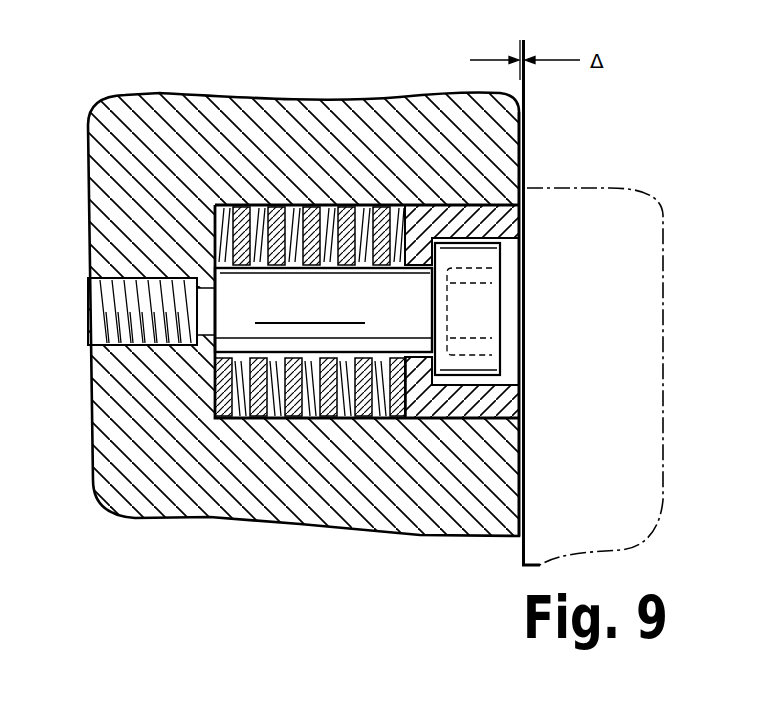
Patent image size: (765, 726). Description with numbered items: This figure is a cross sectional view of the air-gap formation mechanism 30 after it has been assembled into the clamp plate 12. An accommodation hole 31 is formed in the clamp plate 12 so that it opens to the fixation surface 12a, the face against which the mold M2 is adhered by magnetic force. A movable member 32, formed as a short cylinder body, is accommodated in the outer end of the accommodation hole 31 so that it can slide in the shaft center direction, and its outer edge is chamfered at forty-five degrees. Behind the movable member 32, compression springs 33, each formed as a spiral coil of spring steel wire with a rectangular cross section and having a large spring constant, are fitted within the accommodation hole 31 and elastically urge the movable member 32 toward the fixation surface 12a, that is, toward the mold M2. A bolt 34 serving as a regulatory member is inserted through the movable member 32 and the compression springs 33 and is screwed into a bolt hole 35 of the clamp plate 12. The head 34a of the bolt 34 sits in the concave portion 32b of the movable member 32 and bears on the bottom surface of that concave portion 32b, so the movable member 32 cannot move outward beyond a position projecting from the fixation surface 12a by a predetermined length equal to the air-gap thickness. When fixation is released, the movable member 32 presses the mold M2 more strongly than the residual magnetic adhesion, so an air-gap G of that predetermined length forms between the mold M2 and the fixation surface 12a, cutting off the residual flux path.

The air-gap formation mechanism 30 is at (180, 76).
The clamp plate 12 is at (383, 110).
The fixation surface 12a is at (513, 487).
The bolt hole 35 is at (92, 326).
The accommodation hole 31 is at (302, 418).
The compression spring 33 is at (370, 418).
The bolt 34 is at (397, 305).
The head of the bolt 34a is at (500, 258).
The movable member 32 is at (500, 398).
The concave portion 32b is at (525, 372).
The air-gap G is at (523, 463).
The mold M2 is at (523, 565).